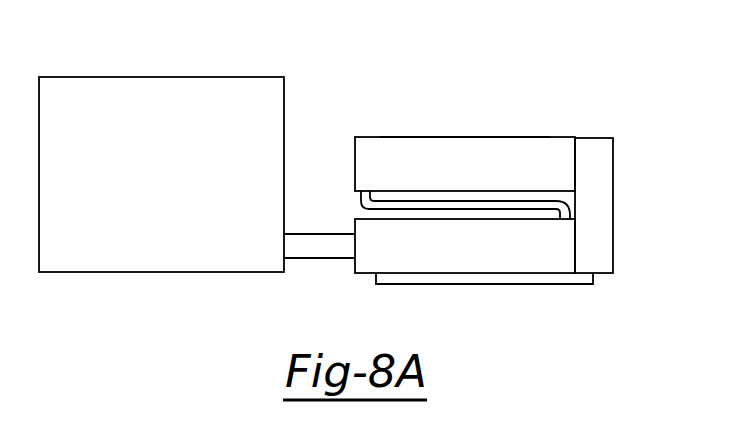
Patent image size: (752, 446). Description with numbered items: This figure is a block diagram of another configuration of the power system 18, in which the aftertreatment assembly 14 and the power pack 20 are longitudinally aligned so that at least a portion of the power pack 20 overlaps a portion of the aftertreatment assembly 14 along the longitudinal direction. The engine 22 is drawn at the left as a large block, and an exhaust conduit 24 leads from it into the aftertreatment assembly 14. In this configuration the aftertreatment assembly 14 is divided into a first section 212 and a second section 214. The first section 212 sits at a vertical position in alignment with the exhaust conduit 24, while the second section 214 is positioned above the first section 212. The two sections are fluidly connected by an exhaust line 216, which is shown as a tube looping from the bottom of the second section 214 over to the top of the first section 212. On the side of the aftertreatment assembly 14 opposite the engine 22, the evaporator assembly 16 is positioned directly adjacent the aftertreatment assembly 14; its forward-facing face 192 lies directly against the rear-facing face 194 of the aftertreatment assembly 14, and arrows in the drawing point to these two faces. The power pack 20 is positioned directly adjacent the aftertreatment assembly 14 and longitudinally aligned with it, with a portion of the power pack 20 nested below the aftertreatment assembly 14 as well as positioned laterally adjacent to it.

The power system 18 is at (374, 78).
The engine 22 is at (106, 124).
The exhaust line 216 is at (358, 201).
The aftertreatment assembly 14 is at (399, 172).
The second section 214 is at (433, 148).
The forward-facing face 192 is at (562, 167).
The evaporator assembly 16 is at (605, 205).
The rear-facing face 194 is at (588, 245).
The first section 212 is at (485, 259).
The exhaust conduit 24 is at (307, 247).
The power pack 20 is at (557, 284).